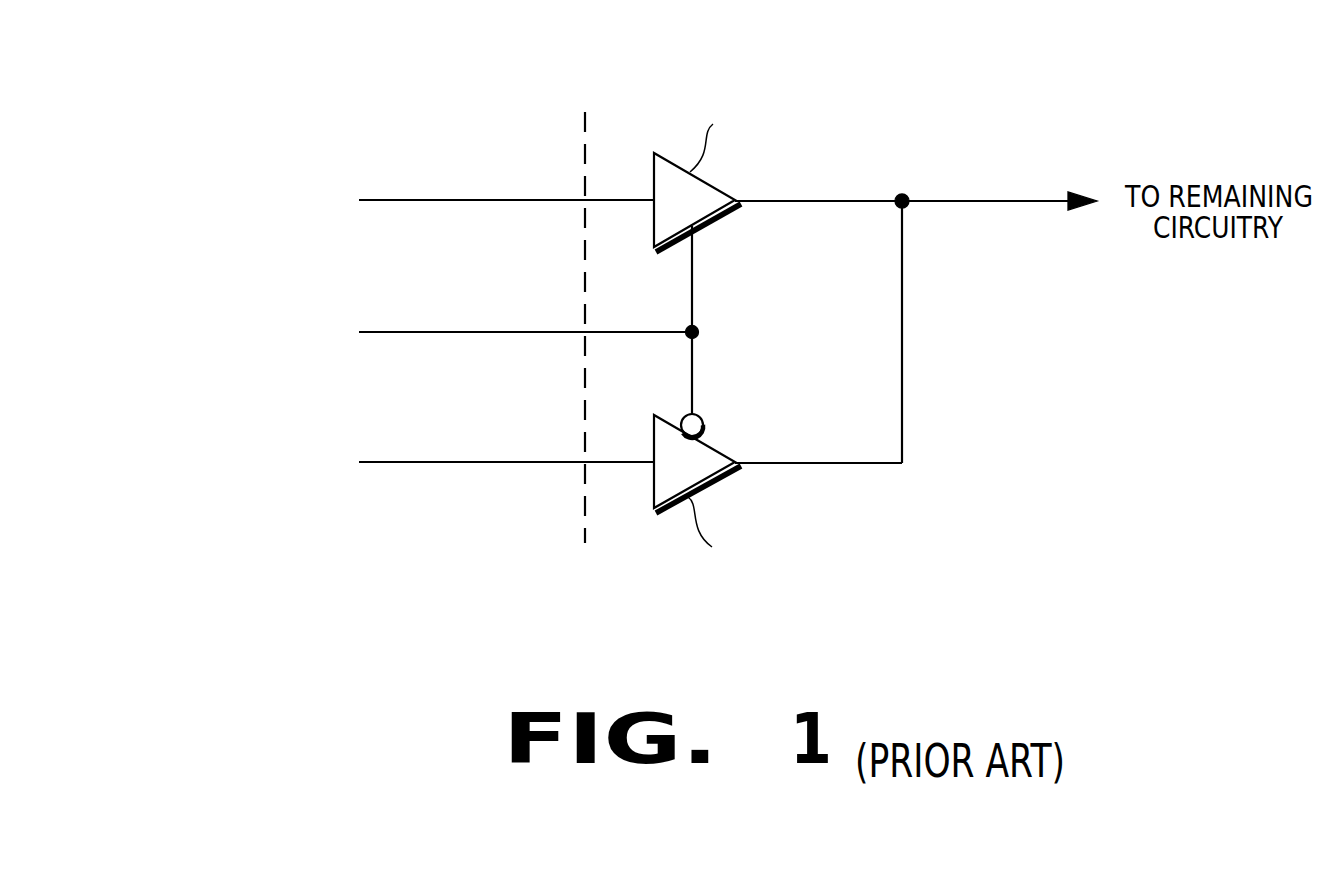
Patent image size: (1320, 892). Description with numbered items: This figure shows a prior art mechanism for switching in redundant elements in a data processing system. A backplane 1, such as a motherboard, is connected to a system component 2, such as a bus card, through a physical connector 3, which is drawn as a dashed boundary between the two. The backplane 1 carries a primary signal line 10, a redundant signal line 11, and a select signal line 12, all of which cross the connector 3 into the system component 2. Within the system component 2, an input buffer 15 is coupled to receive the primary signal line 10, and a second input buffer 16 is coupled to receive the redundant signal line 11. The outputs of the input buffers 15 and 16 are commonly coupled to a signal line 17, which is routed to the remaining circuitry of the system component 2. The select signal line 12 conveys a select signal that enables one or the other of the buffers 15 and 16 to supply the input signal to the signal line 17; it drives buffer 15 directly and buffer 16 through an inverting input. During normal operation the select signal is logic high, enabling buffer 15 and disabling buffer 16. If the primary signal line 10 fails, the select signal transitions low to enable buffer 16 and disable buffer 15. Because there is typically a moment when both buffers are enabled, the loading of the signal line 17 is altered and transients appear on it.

The backplane 1 is at (230, 95).
The system component 2 is at (961, 98).
The physical connector 3 is at (587, 102).
The primary signal line 10 is at (506, 187).
The redundant signal line 11 is at (506, 448).
The select signal line 12 is at (529, 320).
The input buffer 15 is at (697, 221).
The input buffer 16 is at (697, 478).
The signal line 17 is at (916, 319).